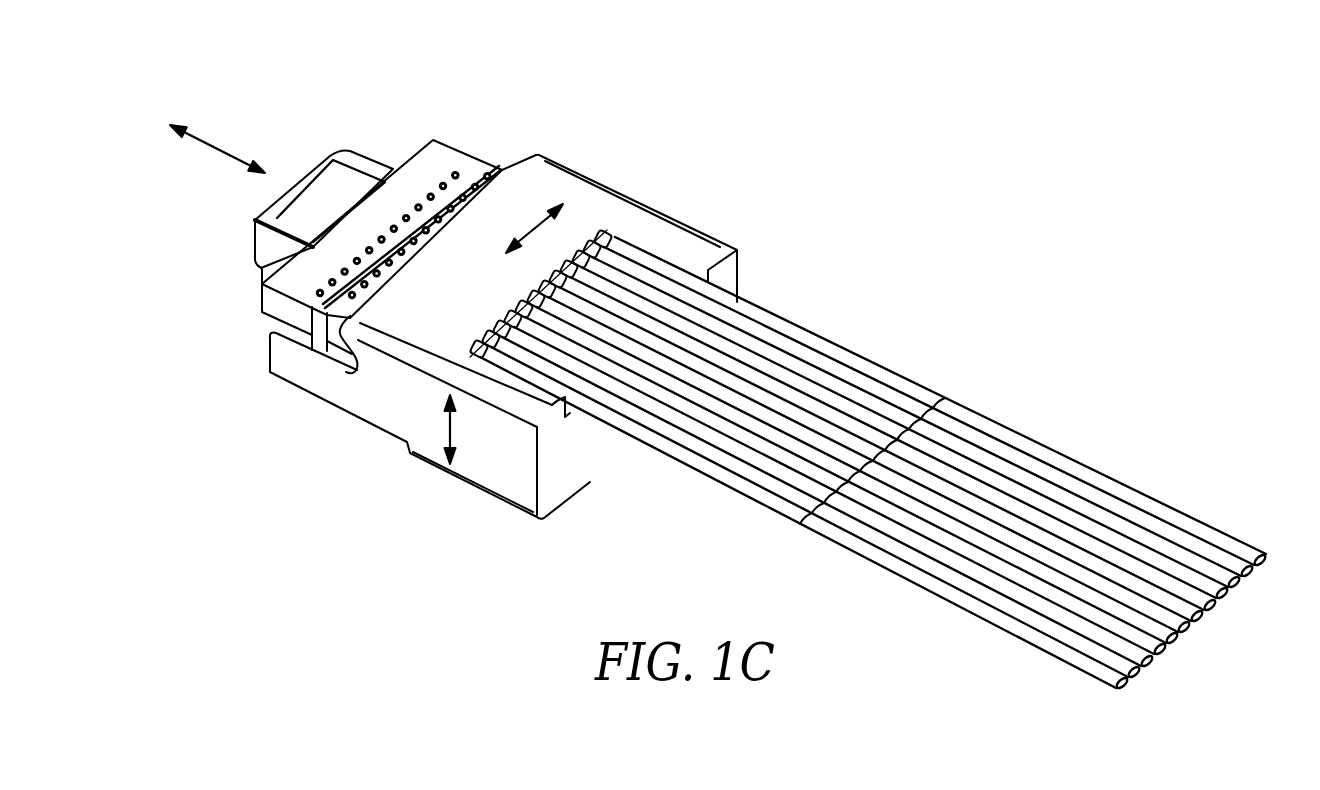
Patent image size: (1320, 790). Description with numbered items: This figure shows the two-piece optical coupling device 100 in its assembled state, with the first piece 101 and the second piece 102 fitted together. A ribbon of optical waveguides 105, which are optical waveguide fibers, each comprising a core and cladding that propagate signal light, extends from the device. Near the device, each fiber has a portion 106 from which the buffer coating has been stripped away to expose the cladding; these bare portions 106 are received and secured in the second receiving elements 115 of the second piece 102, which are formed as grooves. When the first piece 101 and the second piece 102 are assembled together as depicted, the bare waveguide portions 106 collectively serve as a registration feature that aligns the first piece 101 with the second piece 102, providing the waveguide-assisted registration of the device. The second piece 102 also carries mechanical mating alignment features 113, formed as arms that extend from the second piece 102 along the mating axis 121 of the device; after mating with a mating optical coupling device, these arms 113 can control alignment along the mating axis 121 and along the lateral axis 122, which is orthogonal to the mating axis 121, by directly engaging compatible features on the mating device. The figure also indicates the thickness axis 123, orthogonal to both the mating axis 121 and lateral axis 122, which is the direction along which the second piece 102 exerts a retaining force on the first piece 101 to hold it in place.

The optical coupling device 100 is at (245, 83).
The first piece 101 is at (437, 154).
The second piece 102 is at (565, 188).
The optical waveguides 105 is at (807, 337).
The portion of an optical waveguide fiber 106 is at (603, 236).
The mechanical mating alignment features 113 is at (372, 398).
The second receiving elements 115 is at (530, 307).
The mating axis 121 is at (212, 147).
The lateral axis 122 is at (527, 228).
The thickness axis 123 is at (458, 422).